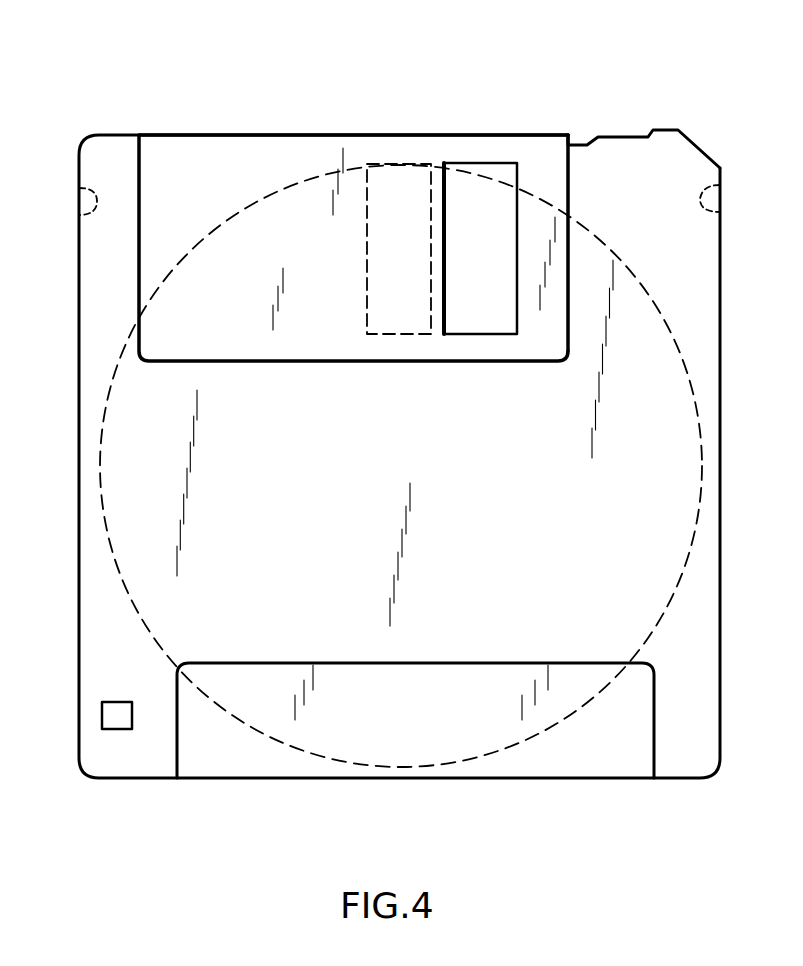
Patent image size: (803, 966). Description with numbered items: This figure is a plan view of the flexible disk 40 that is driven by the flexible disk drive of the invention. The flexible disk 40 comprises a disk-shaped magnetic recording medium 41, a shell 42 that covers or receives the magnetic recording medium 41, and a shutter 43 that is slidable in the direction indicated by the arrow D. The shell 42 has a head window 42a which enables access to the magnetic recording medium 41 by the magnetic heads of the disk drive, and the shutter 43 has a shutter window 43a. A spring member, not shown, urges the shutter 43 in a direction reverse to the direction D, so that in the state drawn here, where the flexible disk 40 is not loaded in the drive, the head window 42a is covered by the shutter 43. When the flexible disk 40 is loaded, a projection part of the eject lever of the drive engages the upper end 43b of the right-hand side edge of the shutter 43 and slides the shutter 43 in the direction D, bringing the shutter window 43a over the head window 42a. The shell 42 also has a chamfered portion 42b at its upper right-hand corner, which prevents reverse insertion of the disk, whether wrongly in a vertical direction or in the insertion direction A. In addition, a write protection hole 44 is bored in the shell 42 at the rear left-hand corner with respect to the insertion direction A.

The flexible disk 40 is at (135, 782).
The magnetic recording medium 41 is at (672, 598).
The shell 42 is at (706, 489).
The head window 42a is at (430, 192).
The chamfered portion 42b is at (700, 150).
The shutter 43 is at (308, 345).
The shutter window 43a is at (437, 340).
The upper end of the right-hand side edge of the shutter 43b is at (571, 142).
The write protection hole 44 is at (100, 716).